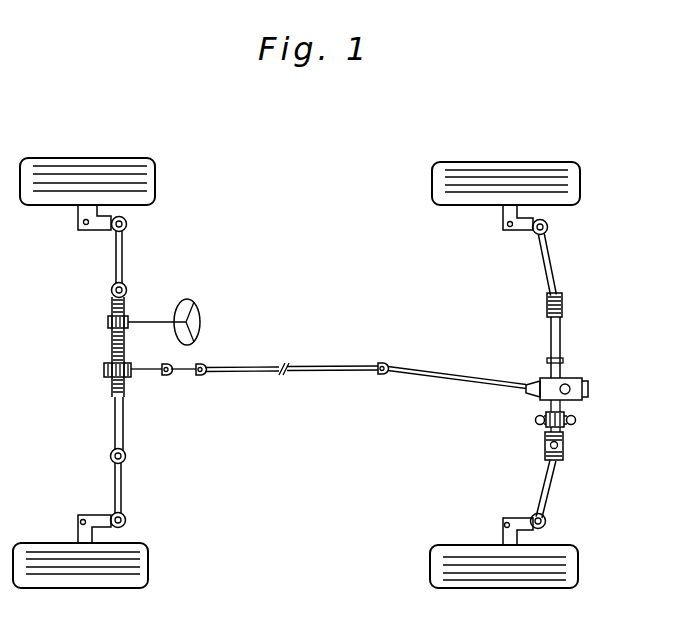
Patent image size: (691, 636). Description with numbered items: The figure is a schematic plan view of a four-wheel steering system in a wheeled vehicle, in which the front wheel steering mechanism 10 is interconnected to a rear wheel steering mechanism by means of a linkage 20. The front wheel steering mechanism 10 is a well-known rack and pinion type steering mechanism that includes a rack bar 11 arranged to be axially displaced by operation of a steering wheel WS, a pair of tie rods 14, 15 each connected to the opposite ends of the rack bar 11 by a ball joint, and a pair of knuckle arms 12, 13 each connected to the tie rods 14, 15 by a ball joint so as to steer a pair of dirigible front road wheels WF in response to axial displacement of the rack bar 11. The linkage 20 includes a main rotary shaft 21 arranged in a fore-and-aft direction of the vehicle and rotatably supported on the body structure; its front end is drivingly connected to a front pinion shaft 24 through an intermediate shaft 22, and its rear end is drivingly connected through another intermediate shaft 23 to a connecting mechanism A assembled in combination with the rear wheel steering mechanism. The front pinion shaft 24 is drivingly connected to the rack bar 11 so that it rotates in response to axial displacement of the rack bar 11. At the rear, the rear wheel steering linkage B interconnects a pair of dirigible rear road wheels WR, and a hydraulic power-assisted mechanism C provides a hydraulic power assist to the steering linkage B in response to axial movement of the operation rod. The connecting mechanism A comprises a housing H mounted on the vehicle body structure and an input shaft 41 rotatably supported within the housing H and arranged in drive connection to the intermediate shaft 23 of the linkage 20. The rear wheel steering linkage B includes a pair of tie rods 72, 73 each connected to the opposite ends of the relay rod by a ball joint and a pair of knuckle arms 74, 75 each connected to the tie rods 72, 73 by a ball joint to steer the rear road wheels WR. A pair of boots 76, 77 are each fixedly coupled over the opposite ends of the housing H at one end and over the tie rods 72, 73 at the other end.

The front road wheels WF is at (152, 184).
The rear road wheels WR is at (582, 186).
The steering wheel WS is at (196, 303).
The front wheel steering mechanism 10 is at (114, 440).
The rack bar 11 is at (112, 385).
The knuckle arm 12 is at (78, 222).
The knuckle arm 13 is at (78, 536).
The tie rod 14 is at (122, 263).
The tie rod 15 is at (123, 495).
The linkage 20 is at (341, 366).
The main rotary shaft 21 is at (263, 374).
The intermediate shaft 22 is at (190, 378).
The intermediate shaft 23 is at (443, 382).
The front pinion shaft 24 is at (152, 378).
The input shaft 41 is at (537, 383).
The tie rod 72 is at (543, 260).
The tie rod 73 is at (546, 488).
The knuckle arm 74 is at (503, 220).
The knuckle arm 75 is at (500, 532).
The boot 76 is at (563, 304).
The boot 77 is at (564, 455).
The connecting mechanism A is at (571, 379).
The rear wheel steering linkage B is at (557, 279).
The hydraulic power-assisted mechanism C is at (558, 336).
The housing H is at (550, 407).